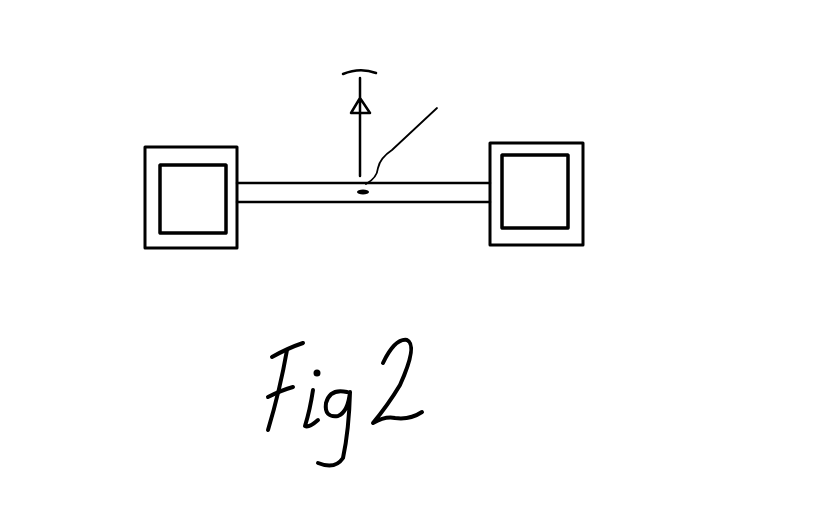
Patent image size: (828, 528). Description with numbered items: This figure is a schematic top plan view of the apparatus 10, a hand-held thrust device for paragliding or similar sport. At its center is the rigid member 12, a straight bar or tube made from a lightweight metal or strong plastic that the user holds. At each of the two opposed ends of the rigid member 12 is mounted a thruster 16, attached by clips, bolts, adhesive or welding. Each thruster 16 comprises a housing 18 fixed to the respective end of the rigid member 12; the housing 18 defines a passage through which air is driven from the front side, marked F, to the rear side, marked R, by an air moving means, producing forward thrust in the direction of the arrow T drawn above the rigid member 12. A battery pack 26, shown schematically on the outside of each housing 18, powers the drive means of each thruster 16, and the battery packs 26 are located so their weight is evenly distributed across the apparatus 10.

The apparatus 10 is at (278, 130).
The rigid member 12 is at (397, 193).
The thruster 16 is at (145, 196).
The housing 18 is at (166, 238).
The battery pack 26 is at (170, 214).